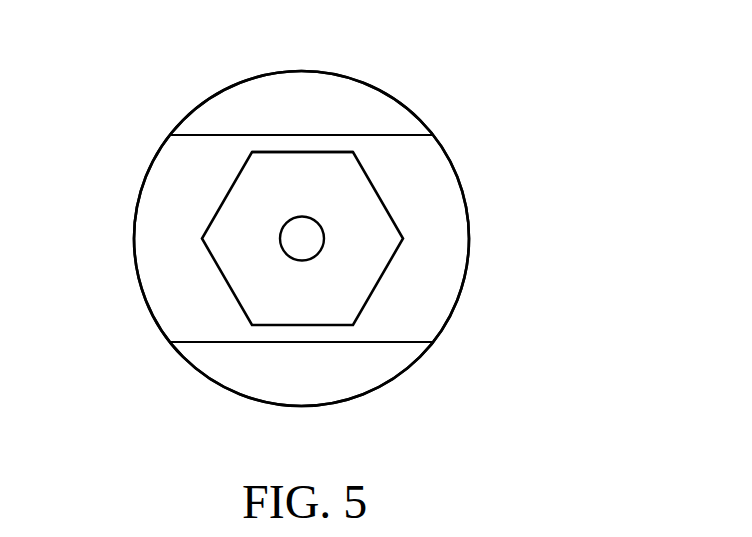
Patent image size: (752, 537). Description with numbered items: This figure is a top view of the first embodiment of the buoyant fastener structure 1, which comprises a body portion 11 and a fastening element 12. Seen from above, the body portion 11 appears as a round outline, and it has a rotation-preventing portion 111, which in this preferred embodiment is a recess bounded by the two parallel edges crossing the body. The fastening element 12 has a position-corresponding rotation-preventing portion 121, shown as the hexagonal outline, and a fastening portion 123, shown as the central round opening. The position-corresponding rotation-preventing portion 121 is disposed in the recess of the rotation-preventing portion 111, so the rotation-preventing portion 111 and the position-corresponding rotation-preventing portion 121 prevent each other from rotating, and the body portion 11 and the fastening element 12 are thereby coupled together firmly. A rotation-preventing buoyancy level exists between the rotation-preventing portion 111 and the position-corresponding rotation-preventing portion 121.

The buoyant fastener structure 1 is at (497, 153).
The body portion 11 is at (386, 70).
The rotation-preventing portion 111 is at (212, 136).
The fastening element 12 is at (385, 276).
The position-corresponding rotation-preventing portion 121 is at (298, 150).
The fastening portion 123 is at (297, 239).